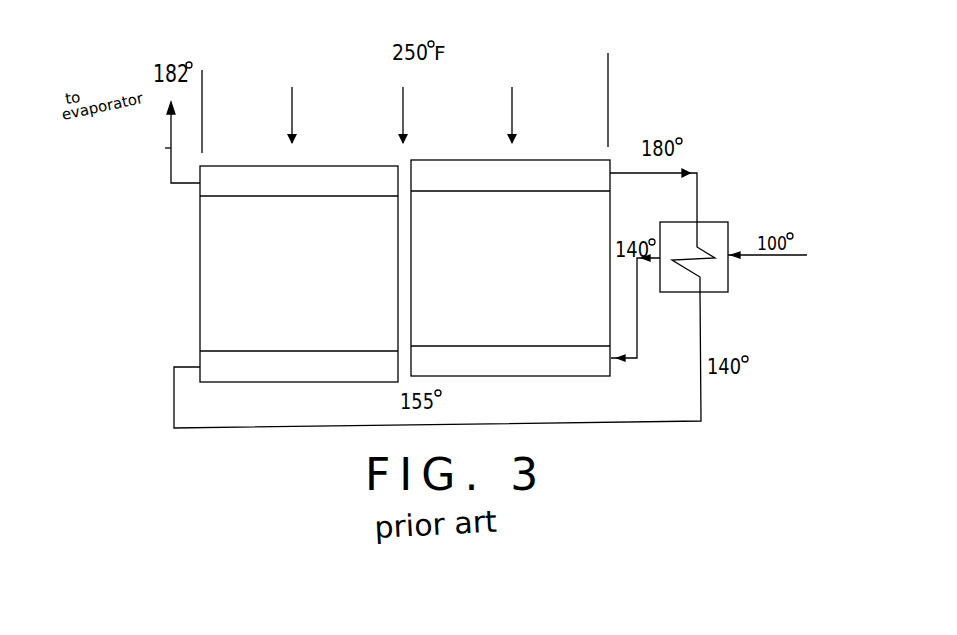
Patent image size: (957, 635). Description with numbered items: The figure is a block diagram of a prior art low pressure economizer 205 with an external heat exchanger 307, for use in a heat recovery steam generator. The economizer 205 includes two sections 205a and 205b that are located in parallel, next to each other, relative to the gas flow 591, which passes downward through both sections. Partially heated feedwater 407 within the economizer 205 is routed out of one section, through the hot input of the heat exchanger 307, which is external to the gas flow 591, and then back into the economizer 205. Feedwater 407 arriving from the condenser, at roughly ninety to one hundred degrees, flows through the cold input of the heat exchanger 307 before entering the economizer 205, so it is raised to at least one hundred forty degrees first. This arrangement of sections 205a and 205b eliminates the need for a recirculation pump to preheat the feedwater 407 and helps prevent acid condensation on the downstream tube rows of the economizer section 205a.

The low pressure economizer 205 is at (170, 163).
The economizer section 205a is at (607, 215).
The economizer section 205b is at (197, 250).
The gas flow 591 is at (523, 105).
The heat exchanger 307 is at (728, 230).
The feedwater 407 is at (795, 257).